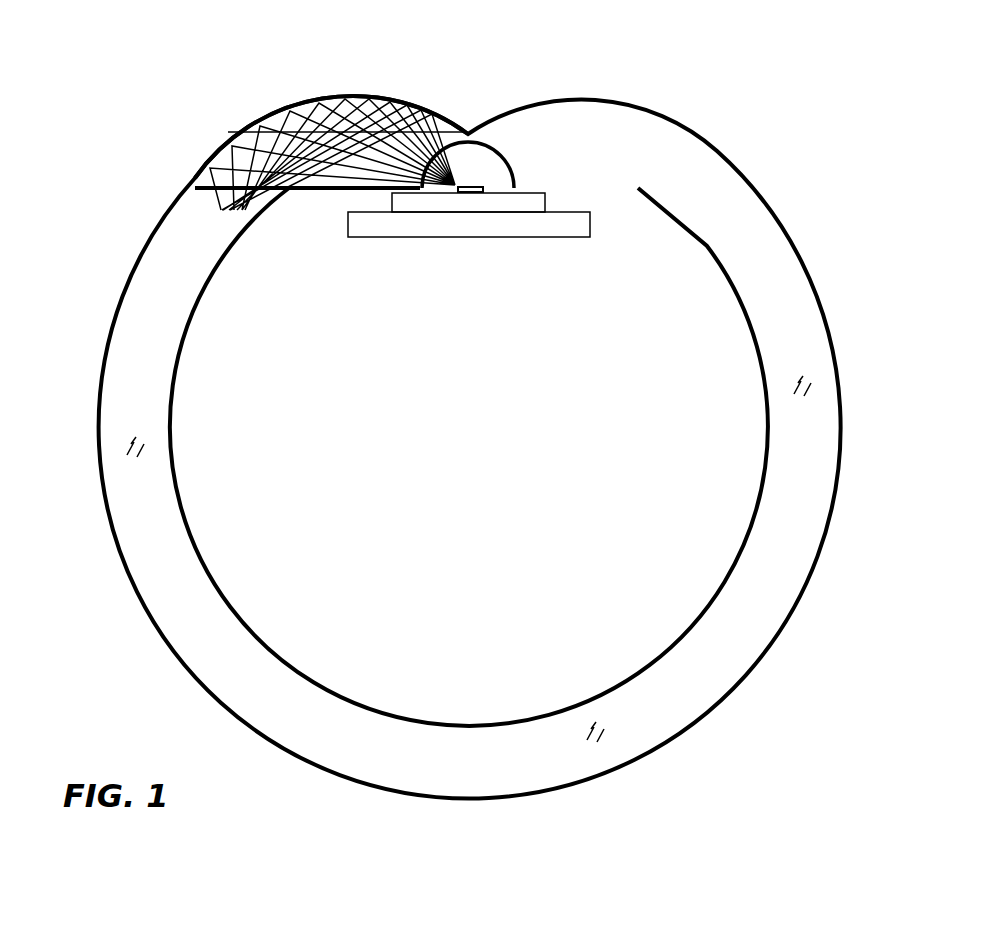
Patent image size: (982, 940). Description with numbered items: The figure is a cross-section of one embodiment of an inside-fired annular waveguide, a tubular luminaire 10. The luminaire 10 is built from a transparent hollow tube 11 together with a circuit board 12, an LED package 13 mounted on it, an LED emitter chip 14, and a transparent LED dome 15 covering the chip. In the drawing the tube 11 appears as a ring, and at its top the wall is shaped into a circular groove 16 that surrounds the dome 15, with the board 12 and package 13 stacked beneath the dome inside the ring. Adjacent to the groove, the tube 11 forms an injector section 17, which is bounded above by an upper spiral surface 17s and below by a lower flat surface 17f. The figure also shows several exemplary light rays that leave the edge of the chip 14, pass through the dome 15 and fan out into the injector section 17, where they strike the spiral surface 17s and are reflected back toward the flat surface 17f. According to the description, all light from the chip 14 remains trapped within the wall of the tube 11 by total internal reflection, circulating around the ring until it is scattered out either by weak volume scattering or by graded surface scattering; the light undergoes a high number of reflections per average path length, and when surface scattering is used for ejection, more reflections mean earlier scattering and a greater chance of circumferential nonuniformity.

The tubular luminaire 10 is at (797, 742).
The transparent hollow tube 11 is at (478, 722).
The circuit board 12 is at (447, 230).
The LED package 13 is at (508, 203).
The LED emitter chip 14 is at (467, 192).
The transparent LED dome 15 is at (488, 172).
The circular groove 16 is at (500, 150).
The injector section 17 is at (208, 172).
The upper spiral surface 17s is at (298, 102).
The lower flat surface 17f is at (342, 190).